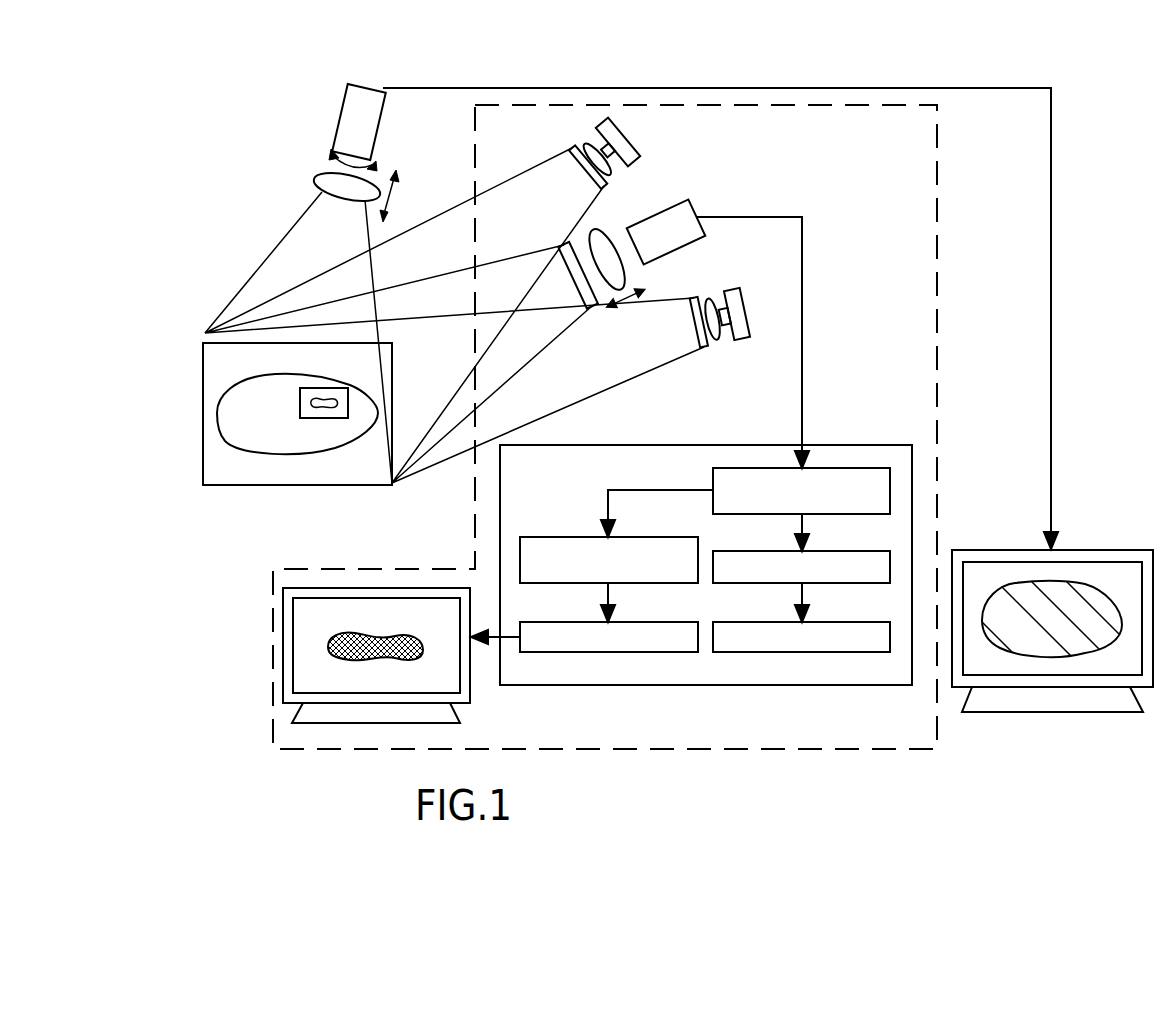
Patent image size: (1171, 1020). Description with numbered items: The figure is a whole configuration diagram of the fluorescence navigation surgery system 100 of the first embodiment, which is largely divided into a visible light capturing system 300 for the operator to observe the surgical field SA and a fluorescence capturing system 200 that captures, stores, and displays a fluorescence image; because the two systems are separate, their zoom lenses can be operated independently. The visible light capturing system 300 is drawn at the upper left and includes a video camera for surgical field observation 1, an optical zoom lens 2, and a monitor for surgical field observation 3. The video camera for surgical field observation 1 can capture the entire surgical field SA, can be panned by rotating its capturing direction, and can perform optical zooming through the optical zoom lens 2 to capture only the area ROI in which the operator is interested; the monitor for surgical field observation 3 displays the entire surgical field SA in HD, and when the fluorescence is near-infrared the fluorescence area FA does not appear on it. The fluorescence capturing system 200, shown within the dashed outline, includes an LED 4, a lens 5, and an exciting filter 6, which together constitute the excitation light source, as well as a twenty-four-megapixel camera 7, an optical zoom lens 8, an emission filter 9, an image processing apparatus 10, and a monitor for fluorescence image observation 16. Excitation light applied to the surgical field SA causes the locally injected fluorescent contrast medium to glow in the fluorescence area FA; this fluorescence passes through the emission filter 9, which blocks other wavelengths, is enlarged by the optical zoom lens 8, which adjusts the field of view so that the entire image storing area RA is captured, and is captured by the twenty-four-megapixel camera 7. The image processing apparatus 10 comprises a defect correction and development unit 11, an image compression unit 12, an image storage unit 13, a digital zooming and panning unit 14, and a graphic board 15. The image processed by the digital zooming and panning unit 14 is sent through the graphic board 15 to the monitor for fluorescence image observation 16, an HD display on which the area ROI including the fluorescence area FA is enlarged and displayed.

The fluorescence navigation surgery system 100 is at (1131, 147).
The fluorescence capturing system 200 is at (690, 752).
The visible light capturing system 300 is at (296, 124).
The video camera for surgical field observation 1 is at (343, 108).
The optical zoom lens 2 is at (327, 173).
The monitor for surgical field observation 3 is at (1123, 550).
The LED 4 is at (630, 132).
The lens 5 is at (618, 172).
The exciting filter 6 is at (575, 152).
The 24M pixel camera 7 is at (693, 205).
The optical zoom lens 8 is at (627, 272).
The emission filter 9 is at (588, 312).
The image processing apparatus 10 is at (870, 445).
The defect correction and development unit 11 is at (842, 515).
The image compression unit 12 is at (842, 584).
The image storage unit 13 is at (842, 652).
The digital zooming and panning unit 14 is at (573, 537).
The graphic board 15 is at (573, 622).
The monitor for fluorescence image observation 16 is at (437, 588).
The image storing area RA is at (223, 485).
The surgical field SA is at (282, 457).
The area in which the operator is interested ROI is at (335, 418).
The fluorescence area FA is at (350, 402).